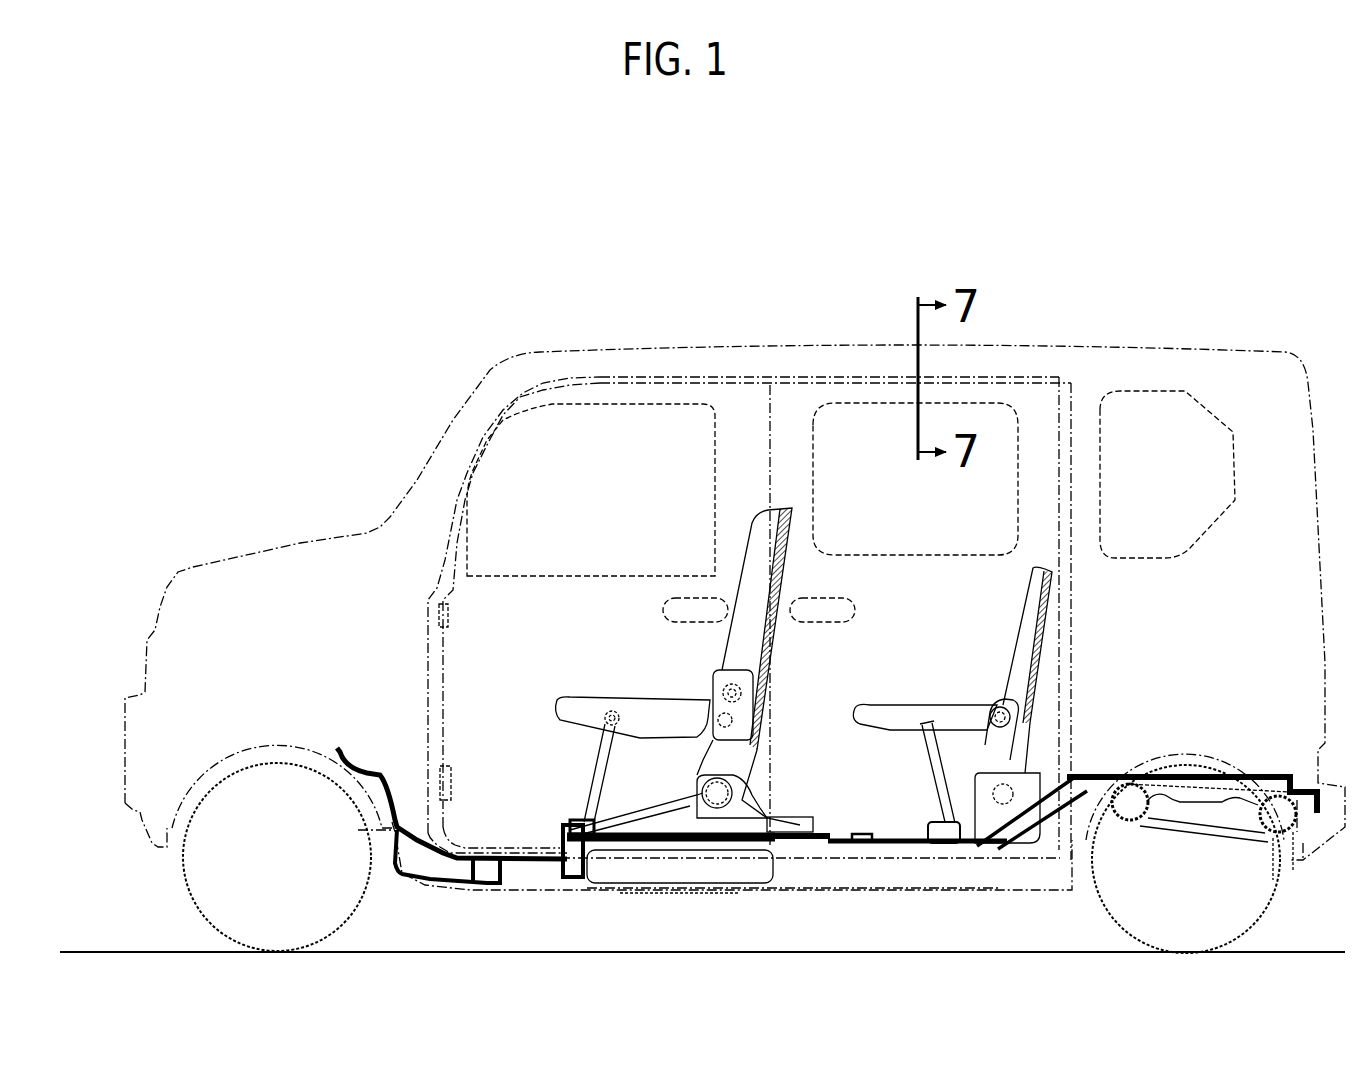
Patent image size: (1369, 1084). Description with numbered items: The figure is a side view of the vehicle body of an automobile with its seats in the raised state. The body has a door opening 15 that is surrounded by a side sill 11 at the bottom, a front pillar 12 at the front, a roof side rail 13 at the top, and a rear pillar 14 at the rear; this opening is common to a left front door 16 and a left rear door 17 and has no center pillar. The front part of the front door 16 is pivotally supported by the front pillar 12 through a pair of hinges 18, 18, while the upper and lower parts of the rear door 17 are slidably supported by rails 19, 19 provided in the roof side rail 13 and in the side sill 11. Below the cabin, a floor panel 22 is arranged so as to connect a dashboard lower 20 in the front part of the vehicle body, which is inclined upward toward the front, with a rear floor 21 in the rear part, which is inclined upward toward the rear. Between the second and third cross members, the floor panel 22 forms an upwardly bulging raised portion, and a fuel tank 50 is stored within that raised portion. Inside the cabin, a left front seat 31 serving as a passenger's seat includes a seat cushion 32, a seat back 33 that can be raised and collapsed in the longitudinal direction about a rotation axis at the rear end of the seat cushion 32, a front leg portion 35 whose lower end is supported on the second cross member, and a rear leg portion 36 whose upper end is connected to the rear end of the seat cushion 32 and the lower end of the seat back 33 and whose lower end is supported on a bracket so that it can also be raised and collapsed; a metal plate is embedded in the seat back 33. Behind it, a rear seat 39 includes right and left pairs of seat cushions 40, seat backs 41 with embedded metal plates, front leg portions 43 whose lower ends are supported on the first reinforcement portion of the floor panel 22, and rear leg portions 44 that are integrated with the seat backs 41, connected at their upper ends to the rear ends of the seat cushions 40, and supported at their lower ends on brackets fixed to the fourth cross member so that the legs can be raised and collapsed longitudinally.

The side sill 11 is at (807, 890).
The front pillar 12 is at (425, 462).
The roof side rail 13 is at (760, 352).
The rear pillar 14 is at (1085, 492).
The door opening 15 is at (607, 380).
The front door 16 is at (483, 418).
The rear door 17 is at (1075, 397).
The hinge 18 is at (455, 620).
The rail 19 is at (852, 377).
The dashboard lower 20 is at (380, 775).
The rear floor 21 is at (1125, 777).
The floor panel 22 is at (820, 836).
The front seat 31 is at (657, 686).
The seat cushion 32 is at (638, 712).
The seat back 33 is at (755, 557).
The front leg portion 35 is at (582, 762).
The rear leg portion 36 is at (740, 775).
The rear seat 39 is at (975, 686).
The seat cushion 40 is at (893, 715).
The seat back 41 is at (1027, 640).
The front leg portion 43 is at (932, 763).
The rear leg portion 44 is at (1020, 760).
The fuel tank 50 is at (690, 900).